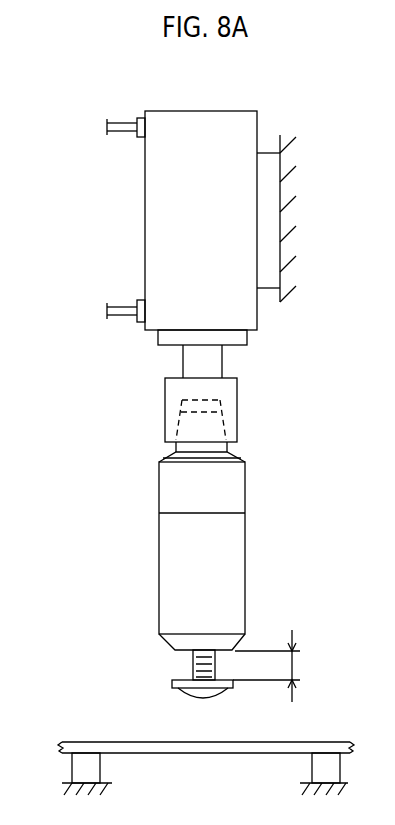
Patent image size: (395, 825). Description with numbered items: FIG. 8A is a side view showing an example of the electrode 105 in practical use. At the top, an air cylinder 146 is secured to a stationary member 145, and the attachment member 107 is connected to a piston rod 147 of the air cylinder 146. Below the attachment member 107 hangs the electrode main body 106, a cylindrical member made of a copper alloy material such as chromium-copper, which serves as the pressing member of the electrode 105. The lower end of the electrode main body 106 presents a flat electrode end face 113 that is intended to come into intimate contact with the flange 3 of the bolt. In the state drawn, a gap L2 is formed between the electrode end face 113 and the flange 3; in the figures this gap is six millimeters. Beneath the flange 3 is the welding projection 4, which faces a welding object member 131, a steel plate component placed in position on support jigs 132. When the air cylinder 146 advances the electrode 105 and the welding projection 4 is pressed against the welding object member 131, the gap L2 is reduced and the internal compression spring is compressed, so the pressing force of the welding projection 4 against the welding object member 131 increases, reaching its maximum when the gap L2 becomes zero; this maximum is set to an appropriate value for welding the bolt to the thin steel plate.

The air cylinder 146 is at (145, 233).
The stationary member 145 is at (282, 222).
The piston rod 147 is at (222, 354).
The attachment member 107 is at (165, 400).
The electrode main body 106 is at (250, 532).
The electrode 105 is at (151, 518).
The electrode end face 113 is at (190, 662).
The flange 3 is at (172, 684).
The welding projection 4 is at (193, 696).
The gap L2 is at (279, 666).
The welding object member 131 is at (93, 742).
The support jigs 132 is at (100, 766).